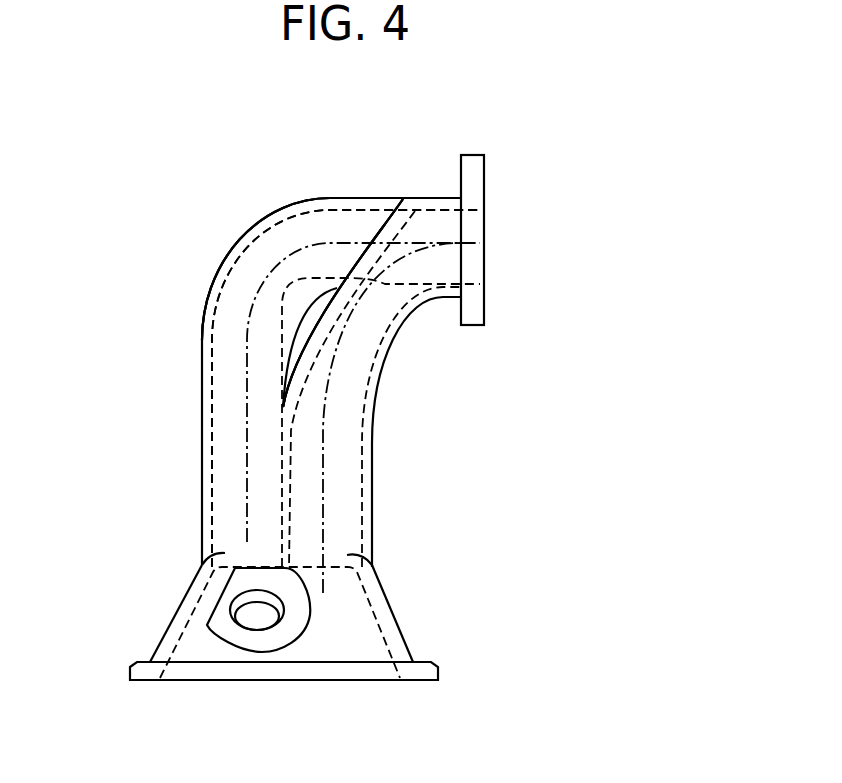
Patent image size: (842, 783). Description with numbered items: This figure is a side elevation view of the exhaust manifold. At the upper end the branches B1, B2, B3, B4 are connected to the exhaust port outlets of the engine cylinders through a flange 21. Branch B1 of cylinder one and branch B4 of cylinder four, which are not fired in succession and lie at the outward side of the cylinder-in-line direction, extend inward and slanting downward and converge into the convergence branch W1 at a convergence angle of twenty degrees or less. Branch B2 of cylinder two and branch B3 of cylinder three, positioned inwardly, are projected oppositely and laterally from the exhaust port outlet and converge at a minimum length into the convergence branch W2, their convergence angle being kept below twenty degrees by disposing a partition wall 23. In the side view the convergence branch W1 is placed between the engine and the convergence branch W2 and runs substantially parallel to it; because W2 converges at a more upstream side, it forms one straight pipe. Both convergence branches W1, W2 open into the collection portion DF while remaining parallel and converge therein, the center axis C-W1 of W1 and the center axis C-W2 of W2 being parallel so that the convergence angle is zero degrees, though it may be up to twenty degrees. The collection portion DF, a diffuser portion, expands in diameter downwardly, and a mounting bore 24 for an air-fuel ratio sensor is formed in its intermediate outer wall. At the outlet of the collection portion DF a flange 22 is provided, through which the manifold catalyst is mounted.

The flange 21 is at (475, 155).
The flange 22 is at (130, 668).
The partition wall 23 is at (240, 283).
The mounting bore 24 is at (258, 617).
The convergence branch W1 is at (373, 552).
The convergence branch W2 is at (202, 496).
The center axis of convergence branch W1 C-W1 is at (323, 472).
The center axis of convergence branch W2 C-W2 is at (247, 432).
The collection portion DF is at (167, 625).
The branch B1 is at (403, 199).
The branch B2 is at (287, 201).
The branch B3 is at (287, 201).
The branch B4 is at (403, 199).